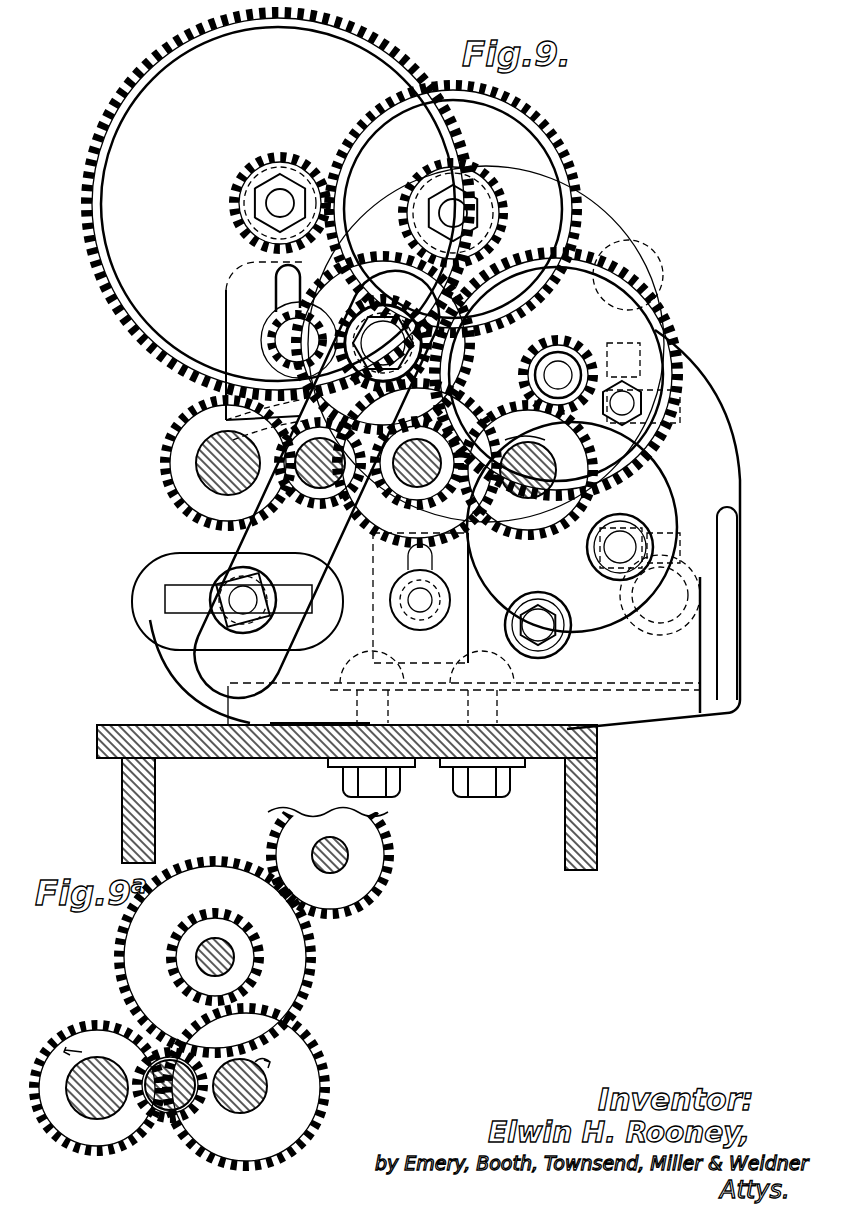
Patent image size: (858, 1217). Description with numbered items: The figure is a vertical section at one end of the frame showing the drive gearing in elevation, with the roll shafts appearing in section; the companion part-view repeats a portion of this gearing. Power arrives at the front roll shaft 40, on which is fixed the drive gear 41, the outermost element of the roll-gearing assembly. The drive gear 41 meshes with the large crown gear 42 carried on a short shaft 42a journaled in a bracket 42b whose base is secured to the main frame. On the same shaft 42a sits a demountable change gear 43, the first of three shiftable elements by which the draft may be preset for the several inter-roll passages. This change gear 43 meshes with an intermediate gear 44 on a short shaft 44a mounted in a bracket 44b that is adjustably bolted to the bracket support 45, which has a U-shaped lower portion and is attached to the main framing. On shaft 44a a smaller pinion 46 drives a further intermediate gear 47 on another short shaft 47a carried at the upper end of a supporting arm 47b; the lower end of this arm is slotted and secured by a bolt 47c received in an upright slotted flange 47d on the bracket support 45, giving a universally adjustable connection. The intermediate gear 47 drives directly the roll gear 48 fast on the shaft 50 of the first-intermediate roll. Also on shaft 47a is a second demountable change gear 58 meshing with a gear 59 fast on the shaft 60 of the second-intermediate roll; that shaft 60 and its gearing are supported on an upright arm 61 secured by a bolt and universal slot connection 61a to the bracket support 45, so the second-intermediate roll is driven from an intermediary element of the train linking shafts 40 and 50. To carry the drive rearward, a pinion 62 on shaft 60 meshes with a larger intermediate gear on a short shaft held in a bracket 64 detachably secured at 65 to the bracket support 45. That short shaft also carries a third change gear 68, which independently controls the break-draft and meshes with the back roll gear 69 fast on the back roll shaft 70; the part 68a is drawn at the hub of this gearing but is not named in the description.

In FIG. 9, the front roll shaft 40 is at (197, 460).
In FIG. 9A, the front roll shaft 40 is at (104, 1112).
In FIG. 9, the drive gear 41 is at (166, 483).
In FIG. 9A, the drive gear 41 is at (88, 1013).
In FIG. 9, the crown gear 42 is at (121, 322).
In FIG. 9, the short shaft 42a is at (262, 203).
In FIG. 9, the bracket 42b is at (243, 265).
In FIG. 9, the change gear 43 is at (280, 170).
In FIG. 9, the intermediate gear 44 is at (530, 130).
In FIG. 9, the short shaft 44a is at (448, 208).
In FIG. 9A, the short shaft 44a is at (332, 873).
In FIG. 9, the bracket 44b is at (612, 236).
In FIG. 9, the bracket support 45 is at (722, 483).
In FIG. 9, the pinion 46 is at (508, 200).
In FIG. 9A, the pinion 46 is at (384, 861).
In FIG. 9, the intermediate gear 47 is at (392, 256).
In FIG. 9A, the intermediate gear 47 is at (316, 962).
In FIG. 9, the short shaft 47a is at (352, 330).
In FIG. 9A, the short shaft 47a is at (213, 938).
In FIG. 9, the supporting arm 47b is at (233, 540).
In FIG. 9, the bolt 47c is at (218, 578).
In FIG. 9, the slotted flange 47d is at (170, 600).
In FIG. 9, the roll gear 48 is at (289, 495).
In FIG. 9A, the roll gear 48 is at (188, 1114).
In FIG. 9, the first-intermediate roll shaft 50 is at (306, 497).
In FIG. 9A, the first-intermediate roll shaft 50 is at (200, 1108).
In FIG. 9, the second change gear 58 is at (388, 303).
In FIG. 9A, the second change gear 58 is at (252, 960).
In FIG. 9, the gear 59 is at (372, 542).
In FIG. 9A, the gear 59 is at (310, 1059).
In FIG. 9, the second-intermediate roll shaft 60 is at (407, 486).
In FIG. 9A, the second-intermediate roll shaft 60 is at (255, 1090).
In FIG. 9, the upright arm 61 is at (383, 560).
In FIG. 9, the bolt and universal slot connection 61a is at (383, 615).
In FIG. 9, the pinion 62 is at (467, 424).
In FIG. 9, the bracket 64 is at (560, 330).
In FIG. 9, the detachable securing means 65 is at (553, 640).
In FIG. 9, the third change gear 68 is at (664, 318).
In FIG. 9, the shaft of gear 68 68a is at (562, 362).
In FIG. 9, the back roll gear 69 is at (620, 430).
In FIG. 9, the back roll shaft 70 is at (534, 494).